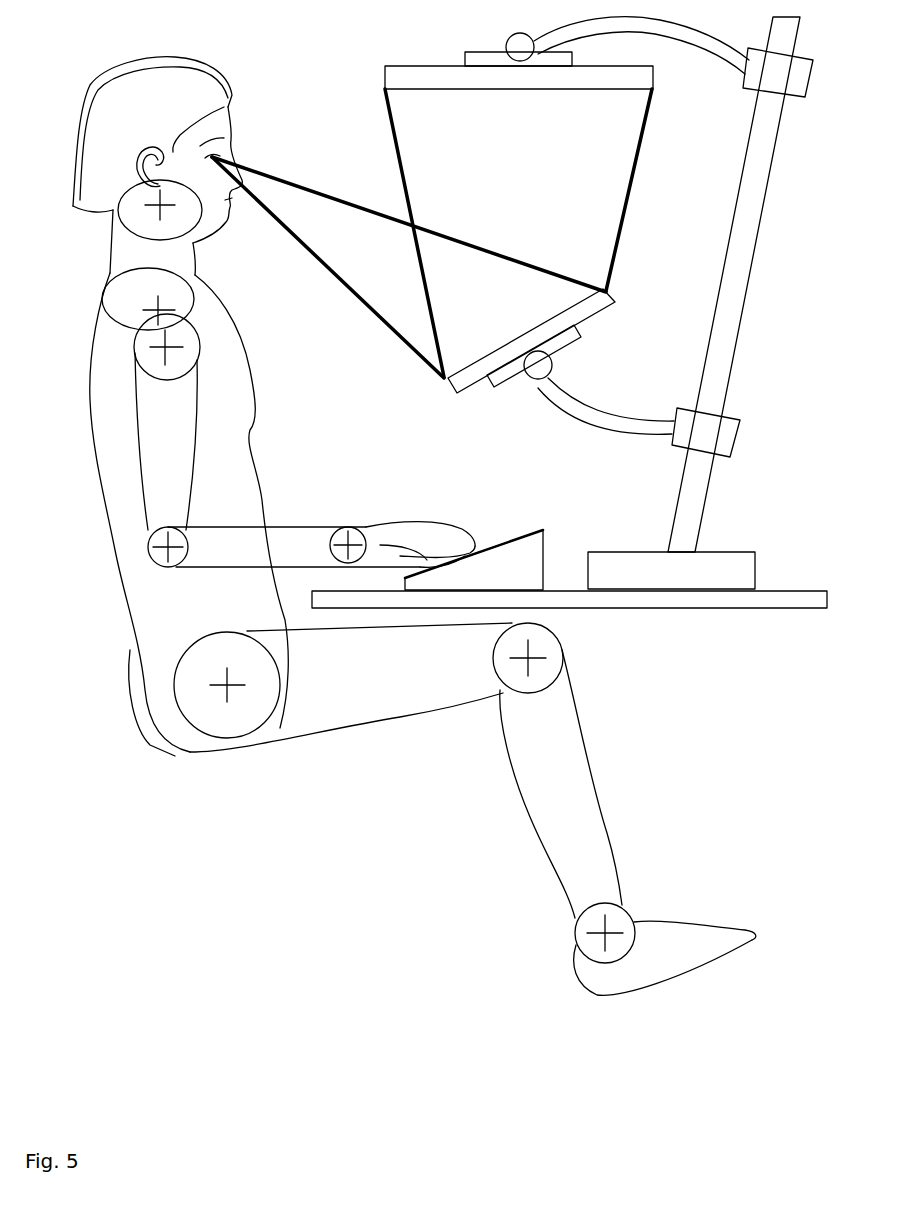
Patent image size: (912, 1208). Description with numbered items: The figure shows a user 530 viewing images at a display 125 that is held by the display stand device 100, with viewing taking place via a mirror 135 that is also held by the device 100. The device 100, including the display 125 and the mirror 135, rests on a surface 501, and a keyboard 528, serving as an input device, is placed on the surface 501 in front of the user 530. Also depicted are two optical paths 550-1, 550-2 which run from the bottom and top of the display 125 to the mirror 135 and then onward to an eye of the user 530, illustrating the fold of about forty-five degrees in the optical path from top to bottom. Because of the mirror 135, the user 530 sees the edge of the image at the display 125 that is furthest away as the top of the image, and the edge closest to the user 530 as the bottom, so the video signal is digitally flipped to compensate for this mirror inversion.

The device 100 is at (724, 178).
The display 125 is at (446, 88).
The mirror 135 is at (596, 307).
The surface 501 is at (763, 610).
The keyboard 528 is at (528, 543).
The user 530 is at (218, 613).
The optical path 550-1 is at (622, 208).
The optical path 550-2 is at (420, 270).